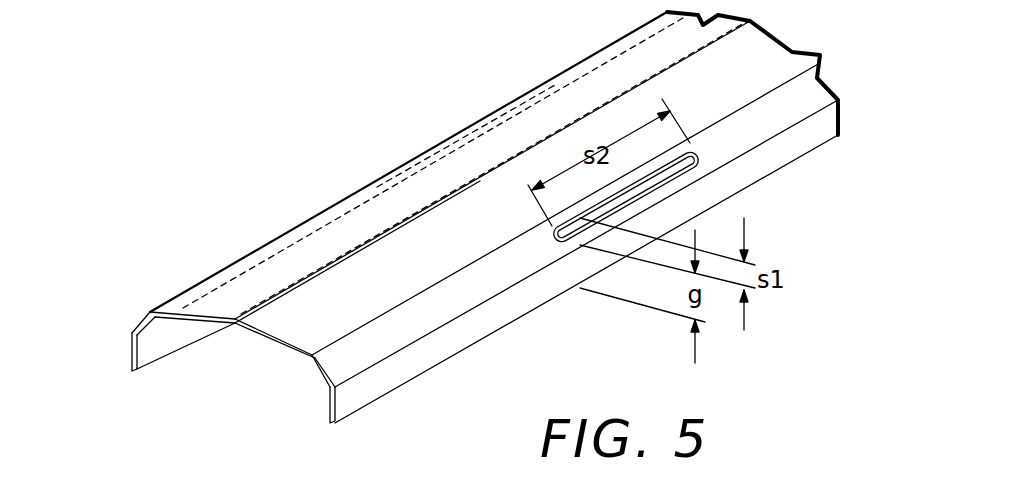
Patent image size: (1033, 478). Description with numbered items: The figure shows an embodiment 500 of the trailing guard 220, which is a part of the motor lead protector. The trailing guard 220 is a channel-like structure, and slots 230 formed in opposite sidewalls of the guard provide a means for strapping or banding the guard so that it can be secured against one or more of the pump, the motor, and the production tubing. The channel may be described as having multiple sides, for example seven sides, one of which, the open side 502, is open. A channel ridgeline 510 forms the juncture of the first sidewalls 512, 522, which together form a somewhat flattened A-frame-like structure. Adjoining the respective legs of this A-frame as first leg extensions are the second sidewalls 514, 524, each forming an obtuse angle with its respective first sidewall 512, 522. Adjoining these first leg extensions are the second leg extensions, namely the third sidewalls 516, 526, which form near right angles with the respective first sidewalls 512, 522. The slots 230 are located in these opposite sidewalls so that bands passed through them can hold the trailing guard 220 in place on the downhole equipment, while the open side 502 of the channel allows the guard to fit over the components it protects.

The trailing guard embodiment 500 is at (137, 166).
The trailing guard 220 is at (255, 242).
The slots 230 is at (468, 118).
The channel ridgeline 510 is at (313, 270).
The open side 502 is at (240, 352).
The first sidewall 512 is at (288, 323).
The second sidewall 514 is at (375, 350).
The third sidewall 516 is at (355, 400).
The first sidewall 522 is at (225, 306).
The second sidewall 524 is at (140, 323).
The third sidewall 526 is at (136, 357).